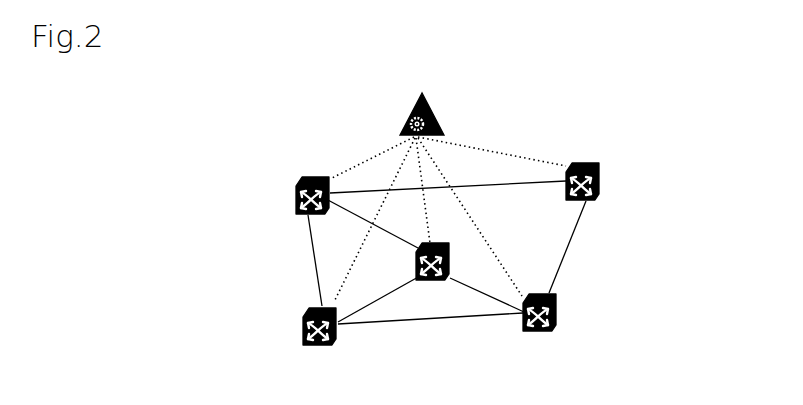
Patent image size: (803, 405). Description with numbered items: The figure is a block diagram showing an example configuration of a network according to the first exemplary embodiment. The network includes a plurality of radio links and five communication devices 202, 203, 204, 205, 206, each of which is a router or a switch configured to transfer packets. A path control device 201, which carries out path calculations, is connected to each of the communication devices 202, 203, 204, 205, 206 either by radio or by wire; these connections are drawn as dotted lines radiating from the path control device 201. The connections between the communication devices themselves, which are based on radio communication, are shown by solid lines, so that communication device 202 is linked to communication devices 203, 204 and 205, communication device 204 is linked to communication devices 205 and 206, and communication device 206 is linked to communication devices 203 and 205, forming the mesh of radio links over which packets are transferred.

The path control device 201 is at (440, 113).
The communication device 202 is at (293, 198).
The communication device 203 is at (603, 177).
The communication device 204 is at (302, 323).
The communication device 205 is at (442, 279).
The communication device 206 is at (563, 303).